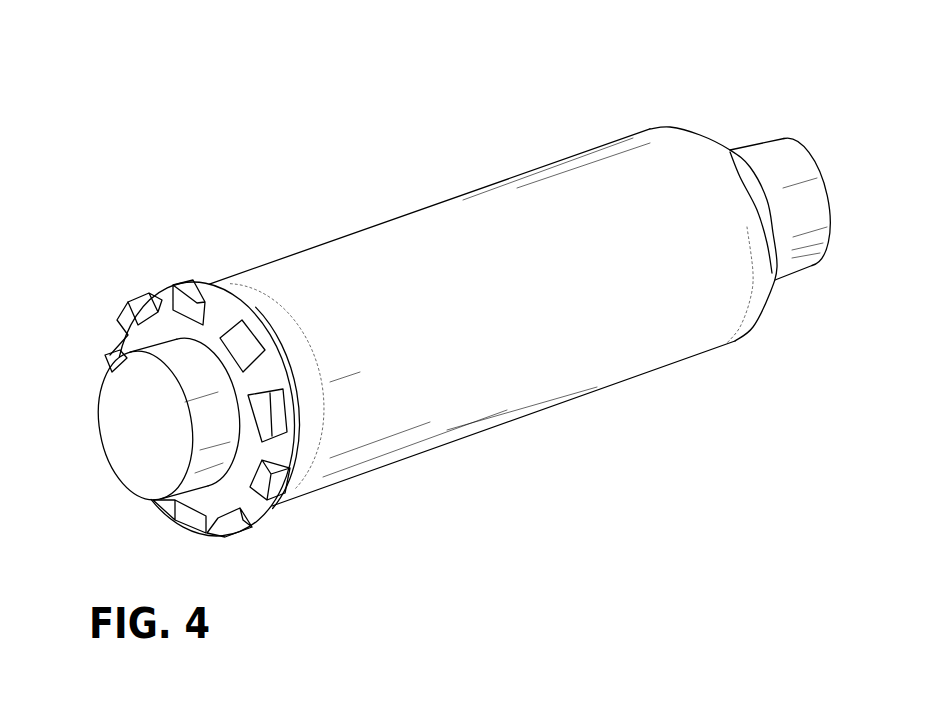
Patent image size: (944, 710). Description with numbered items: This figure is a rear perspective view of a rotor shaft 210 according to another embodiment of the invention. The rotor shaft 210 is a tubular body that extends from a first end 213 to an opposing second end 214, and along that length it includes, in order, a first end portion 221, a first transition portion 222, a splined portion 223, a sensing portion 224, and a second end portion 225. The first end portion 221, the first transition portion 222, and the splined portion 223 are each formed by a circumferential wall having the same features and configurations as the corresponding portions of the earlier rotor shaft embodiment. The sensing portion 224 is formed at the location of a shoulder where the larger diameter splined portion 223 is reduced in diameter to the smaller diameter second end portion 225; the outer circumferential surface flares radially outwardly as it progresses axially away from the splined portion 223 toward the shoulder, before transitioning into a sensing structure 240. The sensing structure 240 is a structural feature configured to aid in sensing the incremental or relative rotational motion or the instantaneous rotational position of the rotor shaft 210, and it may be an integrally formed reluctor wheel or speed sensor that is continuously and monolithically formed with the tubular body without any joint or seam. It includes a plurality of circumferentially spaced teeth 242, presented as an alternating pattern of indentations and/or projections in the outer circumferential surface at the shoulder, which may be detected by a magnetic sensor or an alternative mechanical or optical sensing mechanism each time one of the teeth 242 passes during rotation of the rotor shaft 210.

The rotor shaft 210 is at (395, 192).
The first end 213 is at (788, 136).
The second end 214 is at (104, 403).
The first end portion 221 is at (810, 270).
The first transition portion 222 is at (694, 120).
The splined portion 223 is at (607, 388).
The sensing portion 224 is at (277, 521).
The second end portion 225 is at (126, 483).
The sensing structure 240 is at (237, 533).
The teeth 242 is at (213, 300).